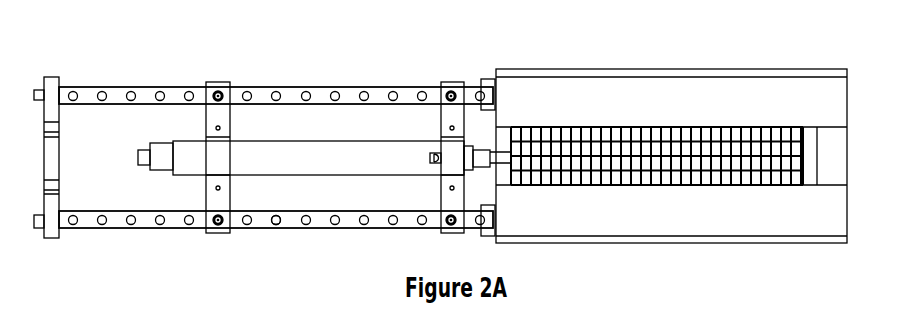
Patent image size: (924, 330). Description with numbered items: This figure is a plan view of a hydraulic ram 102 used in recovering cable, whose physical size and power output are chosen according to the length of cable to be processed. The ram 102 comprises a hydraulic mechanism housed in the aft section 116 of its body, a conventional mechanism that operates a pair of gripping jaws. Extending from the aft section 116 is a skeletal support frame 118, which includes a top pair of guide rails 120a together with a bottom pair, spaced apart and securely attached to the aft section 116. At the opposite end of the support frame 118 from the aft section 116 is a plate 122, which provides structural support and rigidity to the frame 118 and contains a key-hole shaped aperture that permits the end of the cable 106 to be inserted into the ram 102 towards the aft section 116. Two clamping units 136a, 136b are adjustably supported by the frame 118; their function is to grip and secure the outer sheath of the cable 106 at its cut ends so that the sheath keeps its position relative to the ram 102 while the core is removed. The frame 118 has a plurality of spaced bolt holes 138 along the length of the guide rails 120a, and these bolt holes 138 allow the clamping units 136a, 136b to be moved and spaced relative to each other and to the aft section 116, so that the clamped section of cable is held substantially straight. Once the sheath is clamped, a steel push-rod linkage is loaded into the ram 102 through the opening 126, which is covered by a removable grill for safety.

The hydraulic ram 102 is at (588, 44).
The cable 106 is at (249, 155).
The aft section 116 is at (828, 67).
The skeletal support frame 118 is at (140, 80).
The top pair of guide rails 120a is at (355, 89).
The plate 122 is at (46, 240).
The opening 126 is at (634, 126).
The clamping unit 136a is at (218, 83).
The clamping unit 136b is at (452, 81).
The bolt holes 138 is at (275, 223).